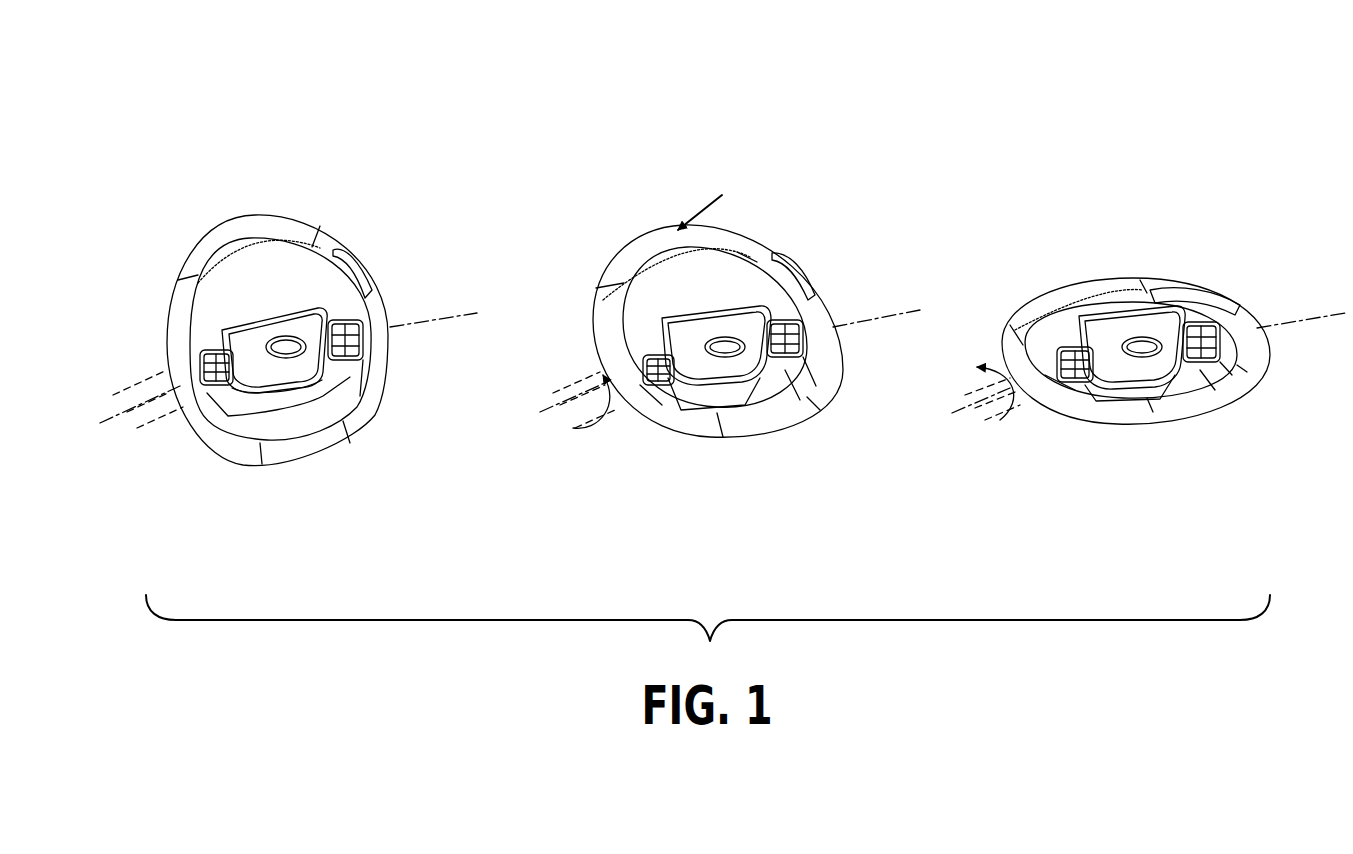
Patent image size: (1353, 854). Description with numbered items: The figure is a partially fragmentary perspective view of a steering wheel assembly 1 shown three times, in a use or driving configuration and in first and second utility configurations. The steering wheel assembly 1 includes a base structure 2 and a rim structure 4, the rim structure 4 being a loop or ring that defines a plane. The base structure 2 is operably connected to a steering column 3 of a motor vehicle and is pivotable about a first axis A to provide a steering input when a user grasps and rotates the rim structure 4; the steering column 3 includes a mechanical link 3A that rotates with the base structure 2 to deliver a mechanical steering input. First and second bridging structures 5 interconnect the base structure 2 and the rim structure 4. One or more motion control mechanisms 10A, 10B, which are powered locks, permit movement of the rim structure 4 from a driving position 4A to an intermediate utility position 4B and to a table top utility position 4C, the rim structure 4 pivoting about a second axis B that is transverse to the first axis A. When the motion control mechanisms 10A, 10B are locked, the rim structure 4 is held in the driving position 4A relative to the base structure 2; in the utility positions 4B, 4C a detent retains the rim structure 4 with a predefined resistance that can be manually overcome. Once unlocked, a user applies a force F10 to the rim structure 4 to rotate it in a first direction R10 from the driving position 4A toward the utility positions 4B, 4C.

The steering wheel assembly 1 is at (380, 202).
The base structure 2 is at (248, 303).
The steering column 3 is at (143, 380).
The mechanical link 3A is at (143, 397).
The rim structure 4 is at (323, 227).
The driving position 4A is at (353, 280).
The intermediate utility position 4B is at (787, 280).
The table top utility position 4C is at (1187, 297).
The bridging structures 5 is at (207, 347).
The motion control mechanism 10A is at (235, 420).
The motion control mechanism 10B is at (347, 381).
The first axis A is at (104, 423).
The second axis B is at (440, 318).
The force F10 is at (700, 211).
The first direction R10 is at (612, 415).